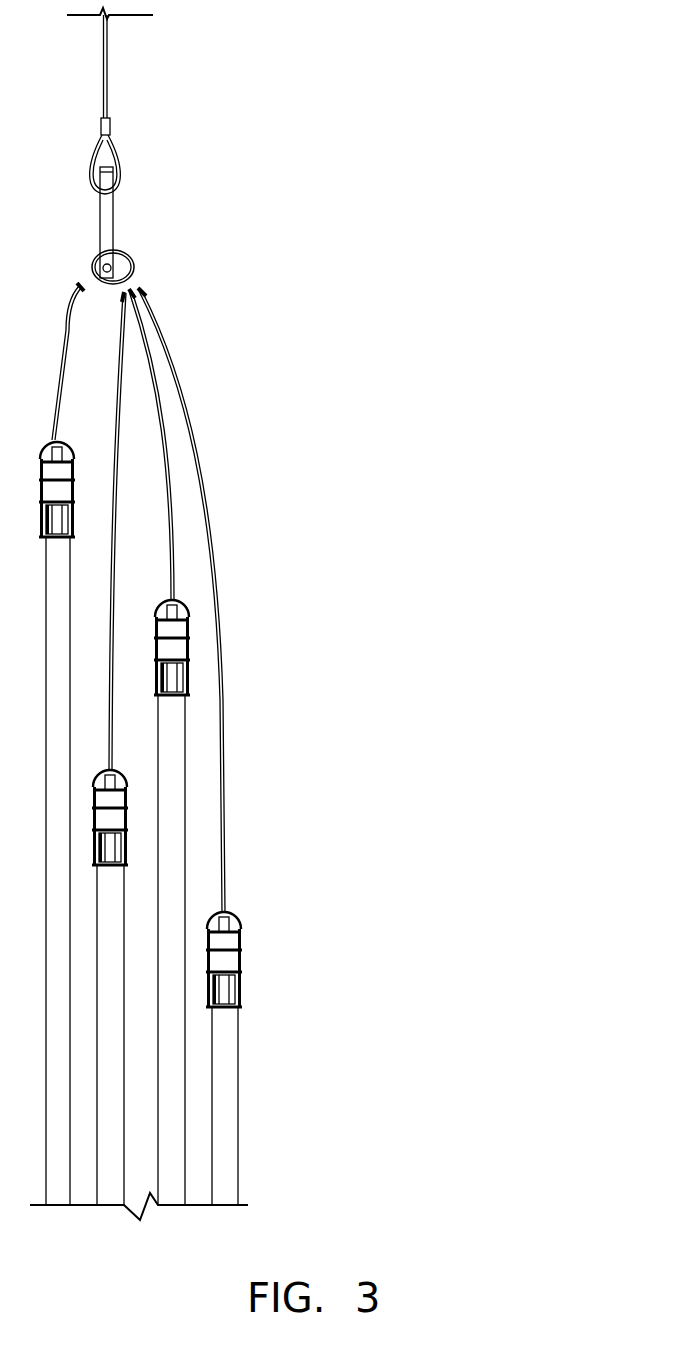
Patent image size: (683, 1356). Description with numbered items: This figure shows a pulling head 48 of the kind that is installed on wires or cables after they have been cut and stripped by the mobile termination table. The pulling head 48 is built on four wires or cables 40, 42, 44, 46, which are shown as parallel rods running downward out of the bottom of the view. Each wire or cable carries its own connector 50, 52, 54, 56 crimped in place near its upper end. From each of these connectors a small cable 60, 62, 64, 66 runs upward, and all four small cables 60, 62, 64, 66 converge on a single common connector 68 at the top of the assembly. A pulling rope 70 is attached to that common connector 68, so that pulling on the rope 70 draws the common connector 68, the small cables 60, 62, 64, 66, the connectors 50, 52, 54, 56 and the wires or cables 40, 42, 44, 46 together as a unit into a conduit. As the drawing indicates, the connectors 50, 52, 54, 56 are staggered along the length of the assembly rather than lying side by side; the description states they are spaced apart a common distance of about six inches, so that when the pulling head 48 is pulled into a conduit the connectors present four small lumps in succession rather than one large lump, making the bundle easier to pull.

The wire or cable 40 is at (55, 1095).
The wire or cable 42 is at (105, 1128).
The wire or cable 44 is at (167, 1157).
The wire or cable 46 is at (222, 1190).
The pulling head 48 is at (312, 591).
The connector 50 is at (73, 497).
The connector 52 is at (193, 655).
The connector 54 is at (125, 810).
The connector 56 is at (245, 950).
The small cable 60 is at (63, 330).
The small cable 62 is at (115, 372).
The small cable 64 is at (158, 397).
The small cable 66 is at (192, 430).
The common connector 68 is at (117, 205).
The pulling rope 70 is at (100, 80).